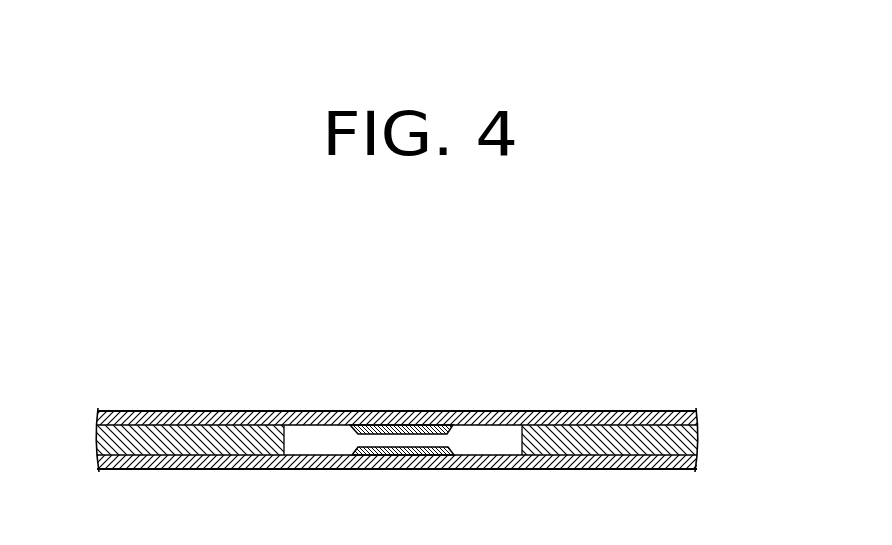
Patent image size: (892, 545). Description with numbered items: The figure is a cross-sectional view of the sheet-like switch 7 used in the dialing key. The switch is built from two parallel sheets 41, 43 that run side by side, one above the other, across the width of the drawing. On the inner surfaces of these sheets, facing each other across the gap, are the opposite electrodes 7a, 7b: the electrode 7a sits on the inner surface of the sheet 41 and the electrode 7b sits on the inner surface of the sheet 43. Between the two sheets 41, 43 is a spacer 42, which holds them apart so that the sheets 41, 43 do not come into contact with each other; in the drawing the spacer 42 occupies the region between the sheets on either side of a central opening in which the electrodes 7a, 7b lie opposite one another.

The sheet-like switch 7 is at (418, 339).
The electrode 7a is at (337, 424).
The electrode 7b is at (346, 449).
The sheet 41 is at (525, 411).
The spacer 42 is at (688, 435).
The sheet 43 is at (492, 458).